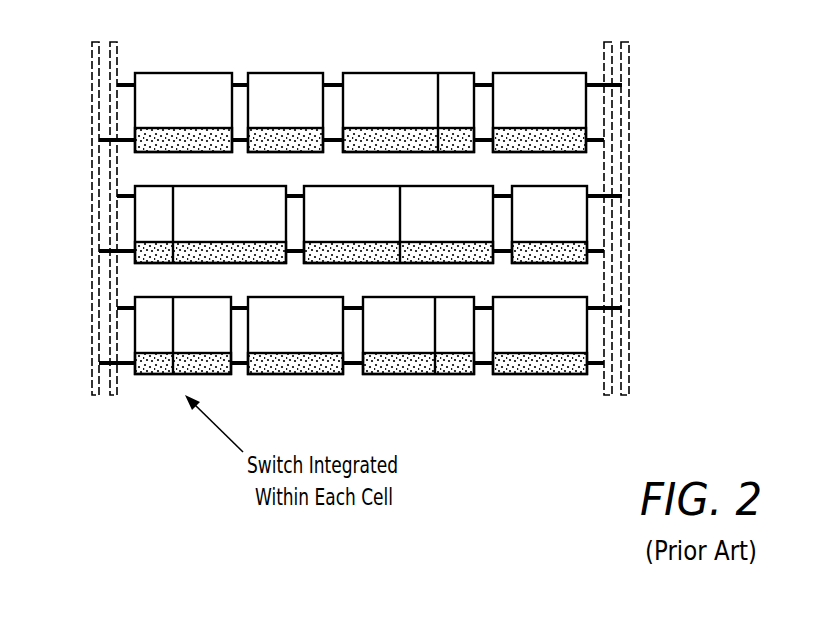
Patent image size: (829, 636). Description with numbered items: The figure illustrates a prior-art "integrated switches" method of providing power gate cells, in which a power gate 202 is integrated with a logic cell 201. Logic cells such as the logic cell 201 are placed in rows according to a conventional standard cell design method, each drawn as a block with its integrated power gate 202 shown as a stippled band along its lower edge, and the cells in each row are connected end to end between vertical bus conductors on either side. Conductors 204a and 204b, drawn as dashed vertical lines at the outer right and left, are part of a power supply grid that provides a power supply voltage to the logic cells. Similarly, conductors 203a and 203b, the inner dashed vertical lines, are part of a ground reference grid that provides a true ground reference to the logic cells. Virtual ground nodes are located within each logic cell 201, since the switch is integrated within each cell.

The logic cell 201 is at (586, 104).
The power gate 202 is at (551, 147).
The conductor 203a is at (604, 385).
The conductor 203b is at (92, 383).
The conductor 204a is at (629, 52).
The conductor 204b is at (117, 50).